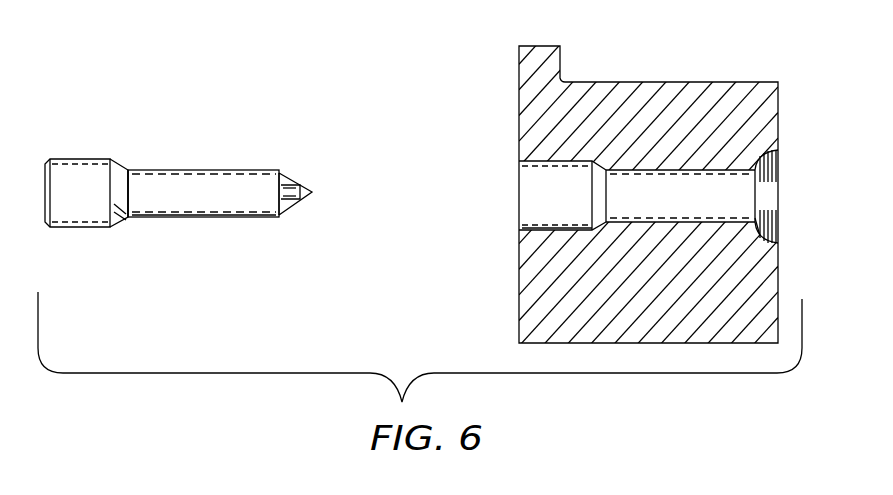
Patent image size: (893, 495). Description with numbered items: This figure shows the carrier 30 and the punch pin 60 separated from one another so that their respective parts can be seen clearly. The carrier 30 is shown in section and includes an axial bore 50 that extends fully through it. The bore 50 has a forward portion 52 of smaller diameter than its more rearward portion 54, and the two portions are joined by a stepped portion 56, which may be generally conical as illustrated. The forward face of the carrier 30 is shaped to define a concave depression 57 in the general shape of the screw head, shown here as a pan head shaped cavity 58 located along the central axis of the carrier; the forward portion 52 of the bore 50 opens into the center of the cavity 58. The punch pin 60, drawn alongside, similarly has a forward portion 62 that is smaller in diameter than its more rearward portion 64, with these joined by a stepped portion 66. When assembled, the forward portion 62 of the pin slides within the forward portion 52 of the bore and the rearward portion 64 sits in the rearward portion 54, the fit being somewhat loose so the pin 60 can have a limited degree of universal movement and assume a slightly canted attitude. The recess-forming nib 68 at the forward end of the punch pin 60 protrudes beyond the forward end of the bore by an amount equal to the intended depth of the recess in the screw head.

The carrier 30 is at (637, 330).
The axial bore 50 is at (663, 247).
The forward portion of the bore 52 is at (728, 182).
The rearward portion of the bore 54 is at (542, 192).
The stepped portion 56 is at (540, 172).
The concave depression 57 is at (773, 162).
The pan head shaped cavity 58 is at (766, 218).
The punch pin 60 is at (190, 167).
The forward portion of the punch pin 62 is at (222, 210).
The rearward portion of the punch pin 64 is at (80, 217).
The stepped portion of the punch pin 66 is at (113, 178).
The nib 68 is at (288, 176).